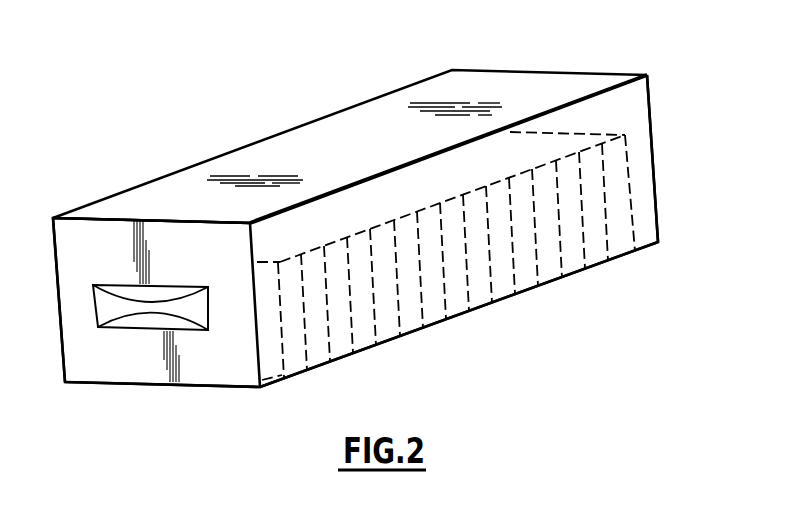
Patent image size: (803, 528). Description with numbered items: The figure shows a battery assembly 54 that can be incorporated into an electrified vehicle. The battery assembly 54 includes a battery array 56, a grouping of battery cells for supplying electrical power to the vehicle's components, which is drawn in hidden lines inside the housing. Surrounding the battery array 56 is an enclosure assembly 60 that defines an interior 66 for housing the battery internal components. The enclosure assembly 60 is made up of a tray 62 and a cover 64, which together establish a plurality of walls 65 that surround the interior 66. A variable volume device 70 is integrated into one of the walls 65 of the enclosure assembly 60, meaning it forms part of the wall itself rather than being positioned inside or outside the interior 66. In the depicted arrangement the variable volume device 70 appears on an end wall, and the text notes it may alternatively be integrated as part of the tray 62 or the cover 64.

The battery assembly 54 is at (355, 212).
The battery array 56 is at (459, 297).
The enclosure assembly 60 is at (95, 183).
The tray 62 is at (198, 385).
The cover 64 is at (305, 148).
The walls 65 is at (100, 363).
The interior 66 is at (630, 100).
The variable volume device 70 is at (140, 305).